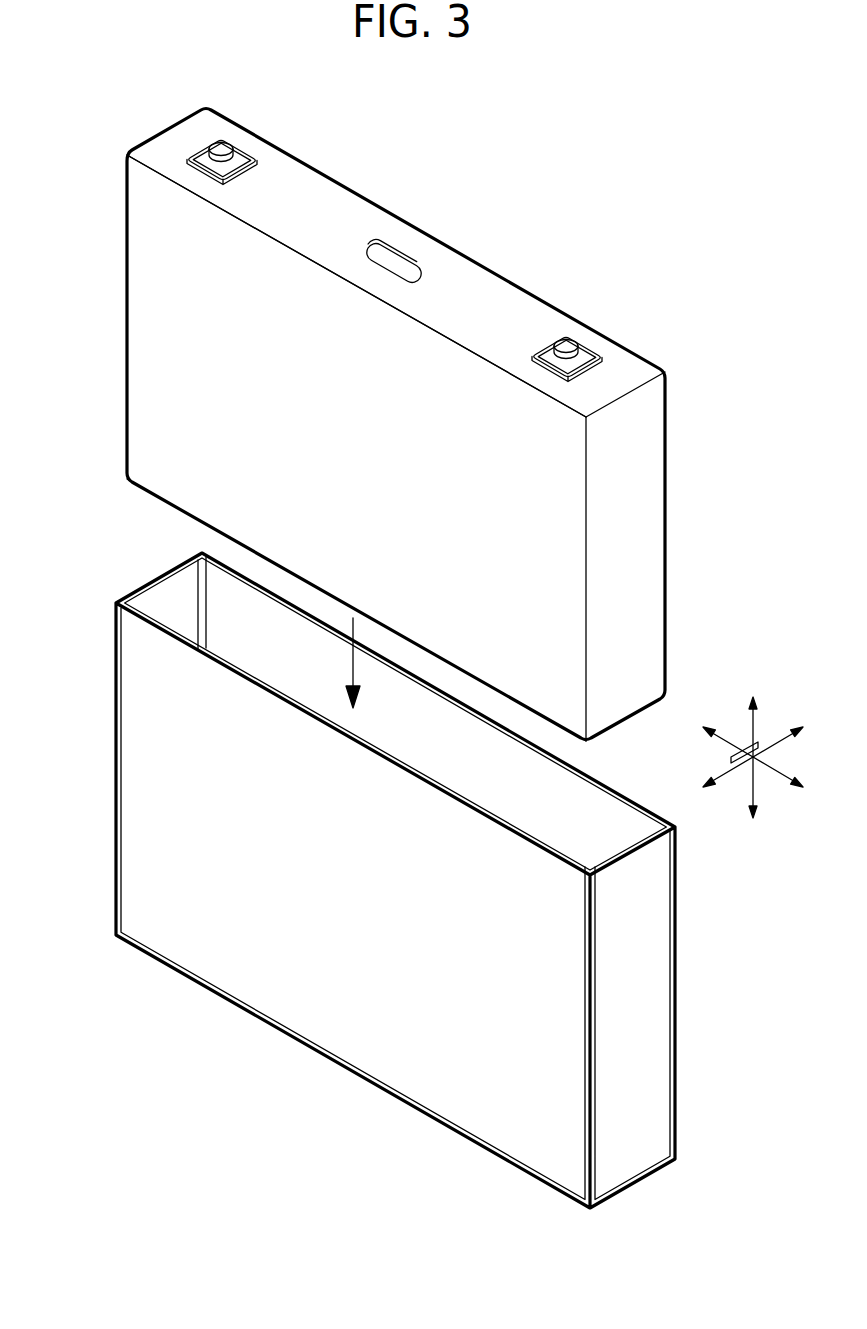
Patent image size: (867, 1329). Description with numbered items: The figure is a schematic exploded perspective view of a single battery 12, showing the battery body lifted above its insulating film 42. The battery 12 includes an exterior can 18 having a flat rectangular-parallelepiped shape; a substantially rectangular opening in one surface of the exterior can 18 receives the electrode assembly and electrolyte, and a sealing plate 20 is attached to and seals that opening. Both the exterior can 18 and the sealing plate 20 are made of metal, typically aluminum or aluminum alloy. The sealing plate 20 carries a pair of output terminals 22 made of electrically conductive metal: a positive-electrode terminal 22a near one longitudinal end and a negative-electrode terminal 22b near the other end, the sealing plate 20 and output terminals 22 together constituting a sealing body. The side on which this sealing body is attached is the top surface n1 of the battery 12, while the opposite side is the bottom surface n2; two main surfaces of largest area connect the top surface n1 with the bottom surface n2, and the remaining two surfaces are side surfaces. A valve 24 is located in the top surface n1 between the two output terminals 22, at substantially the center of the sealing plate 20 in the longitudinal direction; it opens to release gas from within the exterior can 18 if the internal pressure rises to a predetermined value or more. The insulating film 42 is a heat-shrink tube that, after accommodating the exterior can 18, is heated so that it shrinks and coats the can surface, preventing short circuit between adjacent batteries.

The battery 12 is at (381, 1216).
The exterior can 18 is at (647, 590).
The sealing plate 20 is at (640, 369).
The output terminals 22 is at (439, 225).
The positive-electrode terminal 22a is at (568, 342).
The negative-electrode terminal 22b is at (219, 144).
The valve 24 is at (393, 267).
The insulating film 42 is at (648, 1009).
The top surface n1 is at (325, 199).
The bottom surface n2 is at (165, 503).